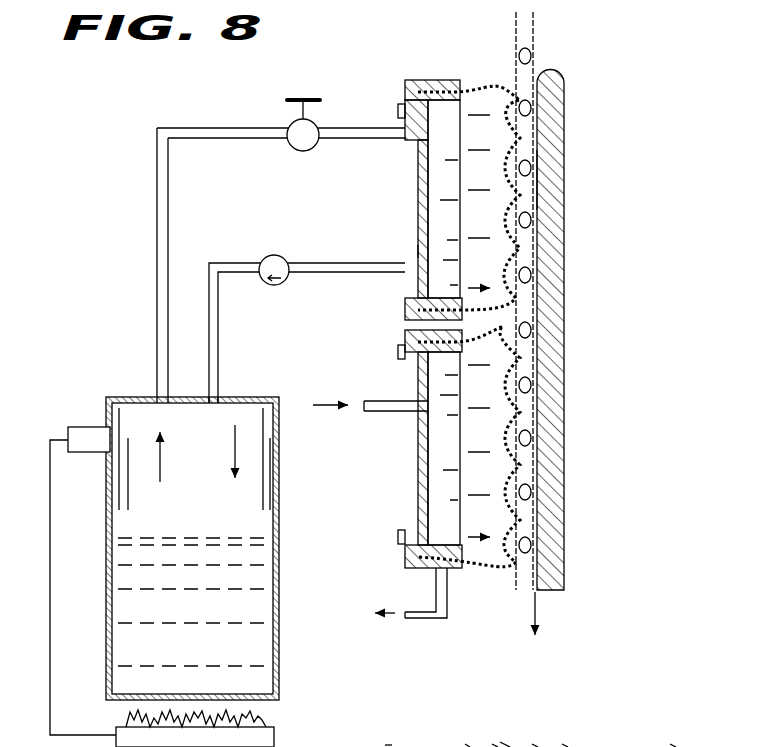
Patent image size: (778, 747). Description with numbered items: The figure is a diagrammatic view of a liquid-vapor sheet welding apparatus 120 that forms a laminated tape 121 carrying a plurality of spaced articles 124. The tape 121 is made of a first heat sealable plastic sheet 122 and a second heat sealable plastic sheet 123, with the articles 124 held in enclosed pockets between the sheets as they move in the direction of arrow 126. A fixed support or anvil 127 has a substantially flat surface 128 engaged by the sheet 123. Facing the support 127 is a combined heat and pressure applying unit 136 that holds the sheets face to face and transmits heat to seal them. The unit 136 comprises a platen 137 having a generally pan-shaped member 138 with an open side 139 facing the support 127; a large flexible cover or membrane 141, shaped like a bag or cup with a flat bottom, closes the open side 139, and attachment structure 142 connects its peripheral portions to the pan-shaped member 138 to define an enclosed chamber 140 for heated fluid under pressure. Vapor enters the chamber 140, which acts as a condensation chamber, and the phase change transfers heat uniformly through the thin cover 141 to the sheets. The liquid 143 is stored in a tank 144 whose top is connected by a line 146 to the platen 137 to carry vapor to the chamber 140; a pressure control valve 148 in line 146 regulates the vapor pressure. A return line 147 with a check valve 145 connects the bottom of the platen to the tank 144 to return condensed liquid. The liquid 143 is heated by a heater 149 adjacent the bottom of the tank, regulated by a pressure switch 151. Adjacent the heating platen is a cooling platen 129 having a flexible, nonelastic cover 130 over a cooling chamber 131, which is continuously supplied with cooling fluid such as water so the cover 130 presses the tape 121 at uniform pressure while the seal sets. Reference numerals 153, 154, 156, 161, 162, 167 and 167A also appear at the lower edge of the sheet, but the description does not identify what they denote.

The liquid-vapor sheet welding apparatus 120 is at (156, 125).
The laminated tape 121 is at (548, 23).
The first heat sealable plastic sheet 122 is at (515, 44).
The second heat sealable plastic sheet 123 is at (538, 57).
The articles 124 is at (538, 272).
The arrow 126 is at (540, 630).
The fixed support or anvil 127 is at (575, 85).
The flat surface 128 is at (541, 178).
The cooling platen 129 is at (410, 450).
The flexible, nonelastic cover 130 is at (511, 572).
The cooling chamber 131 is at (507, 426).
The combined heat and pressure applying unit 136 is at (392, 232).
The platen 137 is at (410, 198).
The pan-shaped member 138 is at (422, 252).
The open side 139 is at (420, 168).
The chamber 140 is at (472, 210).
The flexible cover or membrane 141 is at (492, 85).
The attachment structure 142 is at (414, 312).
The liquid 143 is at (254, 596).
The tank 144 is at (280, 510).
The check valve 145 is at (283, 286).
The line 146 is at (157, 268).
The return line 147 is at (218, 340).
The pressure control valve 148 is at (290, 123).
The heater 149 is at (274, 735).
The pressure switch 151 is at (84, 427).
The element 153 is at (508, 740).
The element 154 is at (495, 746).
The element 156 is at (535, 746).
The element 161 is at (389, 742).
The element 162 is at (676, 743).
The element 167 is at (468, 746).
The element 167A is at (566, 746).